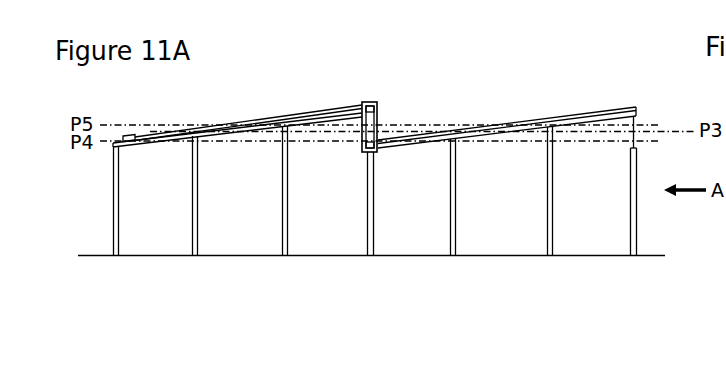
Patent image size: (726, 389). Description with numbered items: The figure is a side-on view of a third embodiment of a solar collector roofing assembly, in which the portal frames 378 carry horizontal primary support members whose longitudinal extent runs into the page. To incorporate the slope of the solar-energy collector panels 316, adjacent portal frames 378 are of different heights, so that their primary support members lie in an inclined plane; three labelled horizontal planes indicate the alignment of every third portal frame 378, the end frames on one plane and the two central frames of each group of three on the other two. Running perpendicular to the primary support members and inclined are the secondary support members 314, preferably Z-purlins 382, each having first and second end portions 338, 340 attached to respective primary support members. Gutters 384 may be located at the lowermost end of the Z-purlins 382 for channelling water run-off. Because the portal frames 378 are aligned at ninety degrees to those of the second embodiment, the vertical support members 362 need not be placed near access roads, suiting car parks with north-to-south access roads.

The secondary support member 314 is at (507, 107).
The Z-purlin 382 is at (510, 125).
The solar-energy collector panel 316 is at (273, 118).
The first end portion 338 is at (110, 147).
The second end portion 340 is at (378, 110).
The vertical support member 362 is at (111, 187).
The portal frame 378 is at (371, 263).
The gutter 384 is at (128, 131).